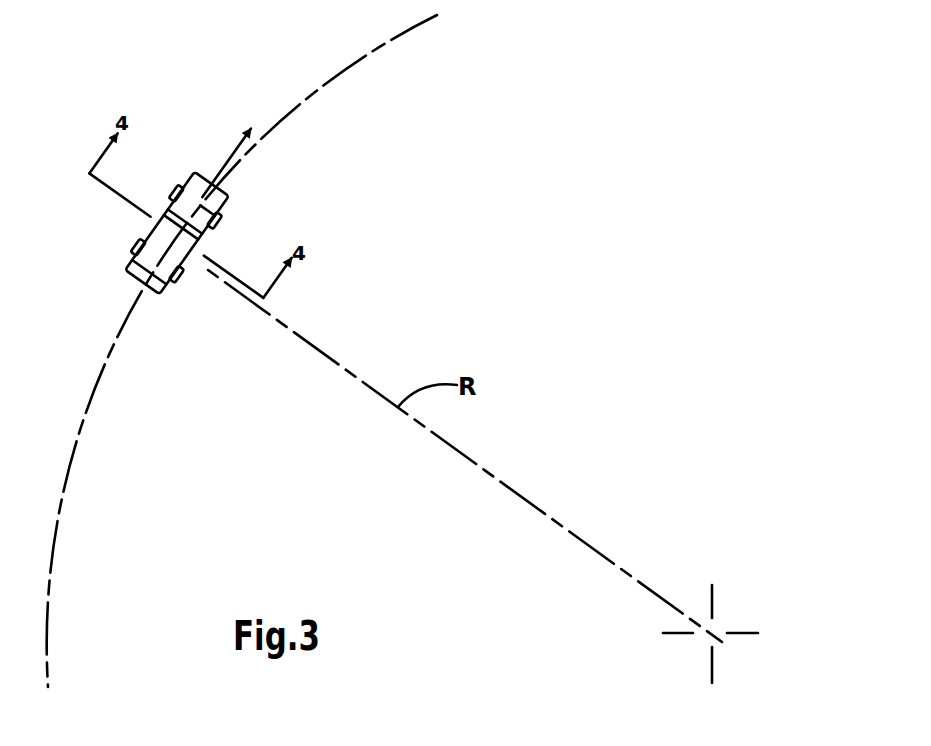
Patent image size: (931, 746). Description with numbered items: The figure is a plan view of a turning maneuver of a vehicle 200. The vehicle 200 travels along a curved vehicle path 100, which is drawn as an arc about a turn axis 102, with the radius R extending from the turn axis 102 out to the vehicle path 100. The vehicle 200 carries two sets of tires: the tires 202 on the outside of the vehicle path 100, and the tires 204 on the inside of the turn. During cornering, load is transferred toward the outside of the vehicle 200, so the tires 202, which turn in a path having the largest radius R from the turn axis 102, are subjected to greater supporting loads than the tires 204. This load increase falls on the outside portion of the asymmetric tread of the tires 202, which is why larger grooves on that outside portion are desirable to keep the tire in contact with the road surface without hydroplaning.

The vehicle path 100 is at (302, 100).
The turn axis 102 is at (713, 632).
The vehicle 200 is at (128, 288).
The tires on the outside of the vehicle path 202 is at (178, 190).
The tires on the inside of the vehicle path 204 is at (218, 224).